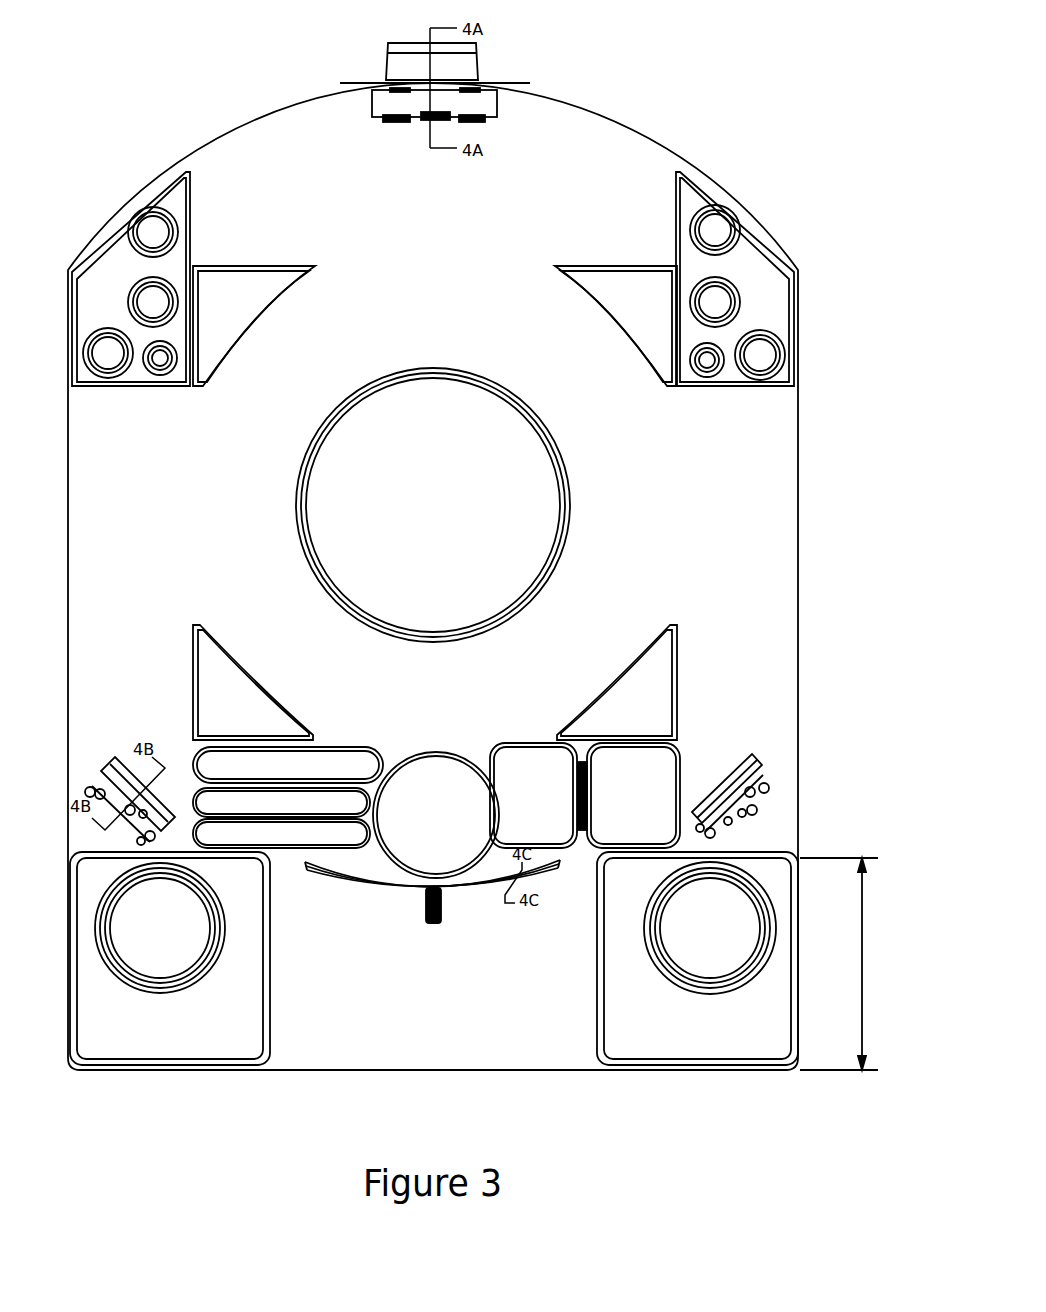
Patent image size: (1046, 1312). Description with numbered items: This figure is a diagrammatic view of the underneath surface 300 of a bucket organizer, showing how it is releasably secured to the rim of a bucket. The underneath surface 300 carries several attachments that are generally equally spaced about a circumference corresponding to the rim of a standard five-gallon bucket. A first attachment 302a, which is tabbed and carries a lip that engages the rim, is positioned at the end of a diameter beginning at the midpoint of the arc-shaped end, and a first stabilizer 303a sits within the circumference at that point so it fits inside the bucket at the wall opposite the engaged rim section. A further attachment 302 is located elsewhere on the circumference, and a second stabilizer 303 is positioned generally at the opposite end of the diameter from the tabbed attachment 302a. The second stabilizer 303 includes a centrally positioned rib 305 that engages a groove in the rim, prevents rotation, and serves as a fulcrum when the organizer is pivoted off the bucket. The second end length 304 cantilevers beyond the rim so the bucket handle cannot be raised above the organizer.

The underneath surface 300 is at (812, 537).
The first attachment 302a is at (487, 82).
The first stabilizer 303a is at (497, 110).
The attachment 302 is at (752, 798).
The stabilizer 303 is at (492, 882).
The second end length 304 is at (845, 964).
The rib 305 is at (433, 923).